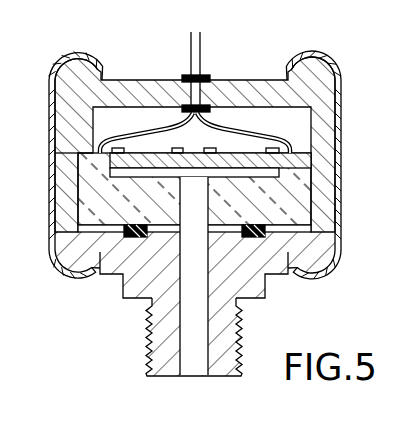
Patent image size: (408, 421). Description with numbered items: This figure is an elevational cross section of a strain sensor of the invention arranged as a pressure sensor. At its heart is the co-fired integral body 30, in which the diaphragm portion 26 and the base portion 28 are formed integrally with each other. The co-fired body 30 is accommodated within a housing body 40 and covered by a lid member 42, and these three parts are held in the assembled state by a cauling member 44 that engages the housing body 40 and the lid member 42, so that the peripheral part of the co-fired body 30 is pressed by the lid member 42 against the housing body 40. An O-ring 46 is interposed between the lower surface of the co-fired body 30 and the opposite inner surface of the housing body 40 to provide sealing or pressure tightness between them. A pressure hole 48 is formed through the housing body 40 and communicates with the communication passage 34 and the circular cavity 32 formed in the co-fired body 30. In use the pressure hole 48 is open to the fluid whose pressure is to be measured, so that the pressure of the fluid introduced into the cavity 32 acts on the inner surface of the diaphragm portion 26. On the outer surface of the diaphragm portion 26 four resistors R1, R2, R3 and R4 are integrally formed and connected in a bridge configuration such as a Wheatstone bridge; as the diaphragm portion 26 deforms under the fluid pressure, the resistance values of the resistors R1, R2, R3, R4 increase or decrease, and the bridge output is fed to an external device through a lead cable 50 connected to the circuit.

The diaphragm portion 26 is at (145, 146).
The base portion 28 is at (287, 213).
The co-fired integral body 30 is at (318, 177).
The circular cavity 32 is at (110, 172).
The communication passage 34 is at (180, 210).
The housing body 40 is at (249, 282).
The lid member 42 is at (326, 92).
The cauling member 44 is at (339, 127).
The O-ring 46 is at (126, 227).
The pressure hole 48 is at (203, 358).
The lead cable 50 is at (203, 51).
The resistor R1 is at (93, 130).
The resistor R2 is at (178, 147).
The resistor R3 is at (209, 147).
The resistor R4 is at (268, 147).